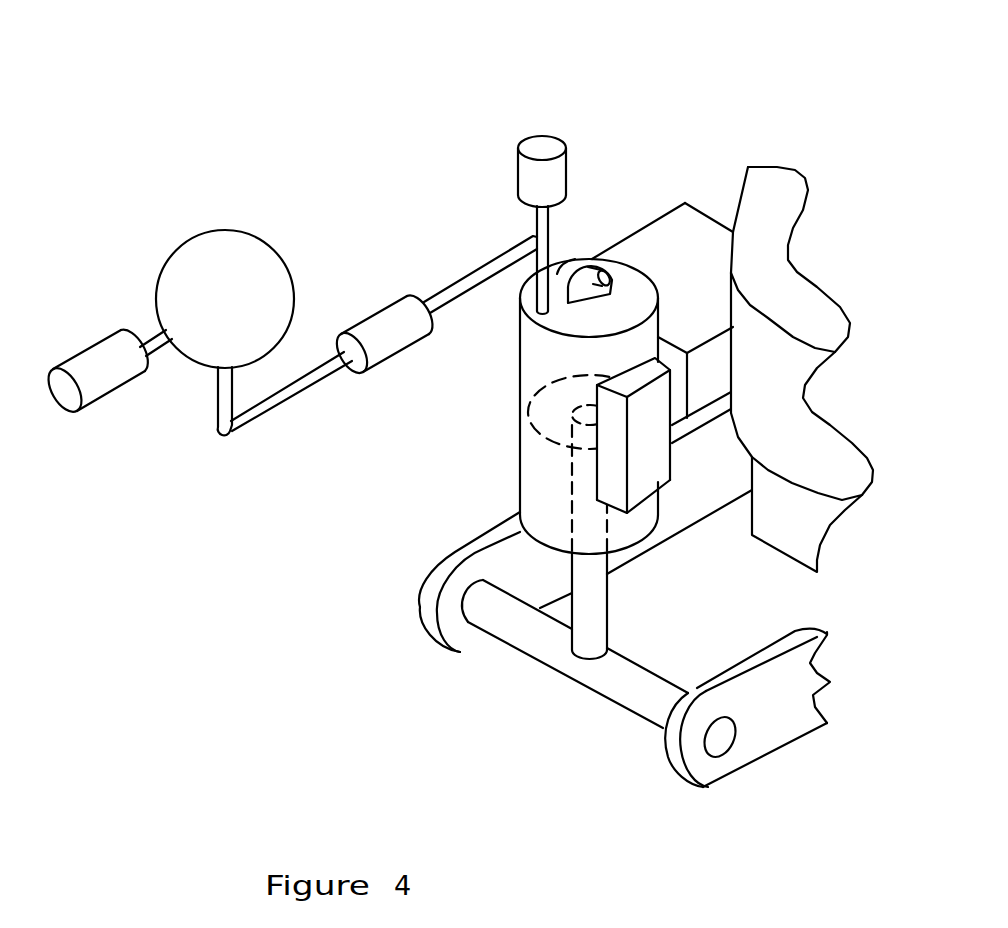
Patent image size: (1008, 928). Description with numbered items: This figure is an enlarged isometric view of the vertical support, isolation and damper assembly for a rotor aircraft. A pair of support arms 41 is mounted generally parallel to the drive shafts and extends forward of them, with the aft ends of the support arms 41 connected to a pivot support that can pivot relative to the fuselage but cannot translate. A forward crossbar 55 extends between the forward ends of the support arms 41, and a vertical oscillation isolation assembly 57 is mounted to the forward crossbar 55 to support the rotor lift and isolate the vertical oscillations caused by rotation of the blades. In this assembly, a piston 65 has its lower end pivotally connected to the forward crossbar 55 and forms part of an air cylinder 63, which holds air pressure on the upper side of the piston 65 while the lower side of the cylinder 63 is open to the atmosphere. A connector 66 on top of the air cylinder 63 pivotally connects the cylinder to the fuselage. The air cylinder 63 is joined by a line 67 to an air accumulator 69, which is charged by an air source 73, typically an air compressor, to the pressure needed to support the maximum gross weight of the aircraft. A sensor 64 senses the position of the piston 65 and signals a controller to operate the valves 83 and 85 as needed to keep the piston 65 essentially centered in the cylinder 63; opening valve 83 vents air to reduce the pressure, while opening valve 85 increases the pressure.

The support arm 41 is at (775, 720).
The forward crossbar 55 is at (527, 642).
The vertical oscillation isolation assembly 57 is at (292, 550).
The air cylinder 63 is at (521, 365).
The sensor 64 is at (662, 478).
The piston 65 is at (537, 433).
The connector 66 is at (588, 258).
The line 67 is at (468, 278).
The air accumulator 69 is at (213, 253).
The air source 73 is at (83, 352).
The valve 83 is at (541, 135).
The valve 85 is at (367, 315).